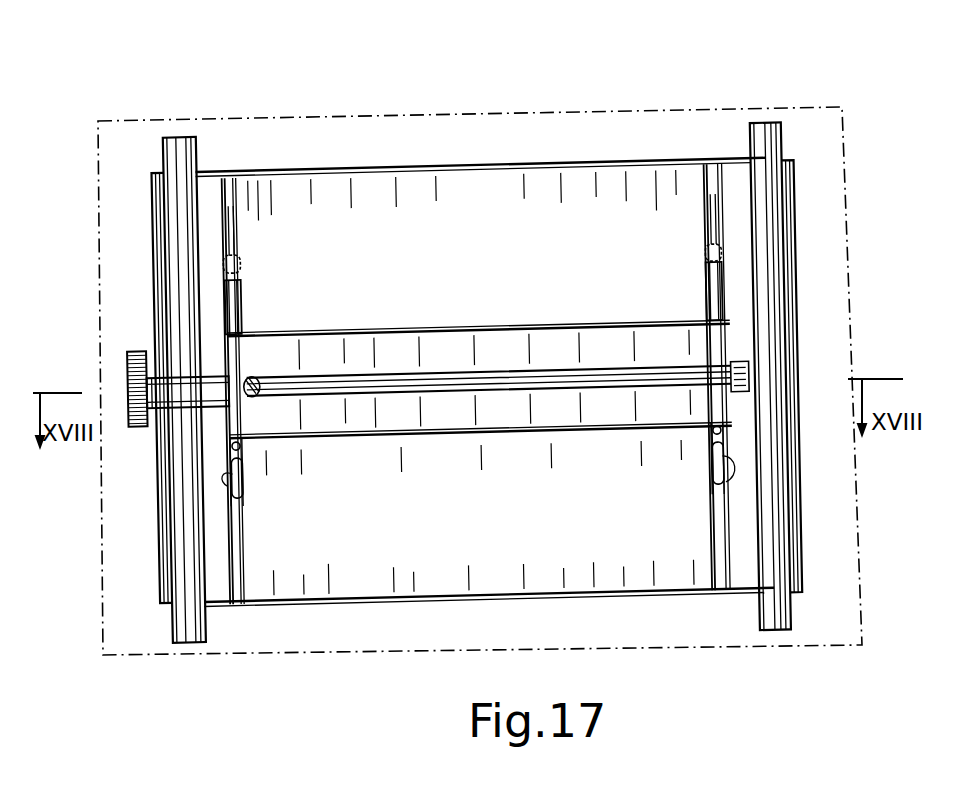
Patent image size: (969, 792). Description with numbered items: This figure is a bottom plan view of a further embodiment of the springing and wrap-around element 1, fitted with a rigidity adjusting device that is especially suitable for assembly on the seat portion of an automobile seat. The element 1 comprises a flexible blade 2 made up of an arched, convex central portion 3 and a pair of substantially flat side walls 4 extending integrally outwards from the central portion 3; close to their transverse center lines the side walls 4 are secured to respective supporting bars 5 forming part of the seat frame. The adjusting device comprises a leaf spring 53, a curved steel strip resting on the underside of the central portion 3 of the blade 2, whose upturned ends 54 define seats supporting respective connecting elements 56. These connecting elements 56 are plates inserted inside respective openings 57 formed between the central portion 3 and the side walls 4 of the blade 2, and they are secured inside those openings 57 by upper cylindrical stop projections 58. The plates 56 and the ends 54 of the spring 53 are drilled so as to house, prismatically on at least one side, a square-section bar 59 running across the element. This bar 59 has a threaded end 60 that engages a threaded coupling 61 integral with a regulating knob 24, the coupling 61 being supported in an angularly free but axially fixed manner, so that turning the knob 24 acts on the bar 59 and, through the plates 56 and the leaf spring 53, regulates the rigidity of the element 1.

The springing and wrap-around element 1 is at (266, 140).
The flexible blade 2 is at (561, 155).
The central portion 3 is at (440, 210).
The side walls 4 is at (211, 197).
The supporting bars 5 is at (185, 268).
The regulating knob 24 is at (130, 367).
The leaf spring 53 is at (482, 425).
The upturned ends 54 is at (255, 448).
The connecting elements 56 is at (258, 324).
The openings 57 is at (240, 500).
The upper cylindrical stop projections 58 is at (248, 277).
The square-section bar 59 is at (512, 388).
The threaded end 60 is at (256, 385).
The threaded coupling 61 is at (180, 410).